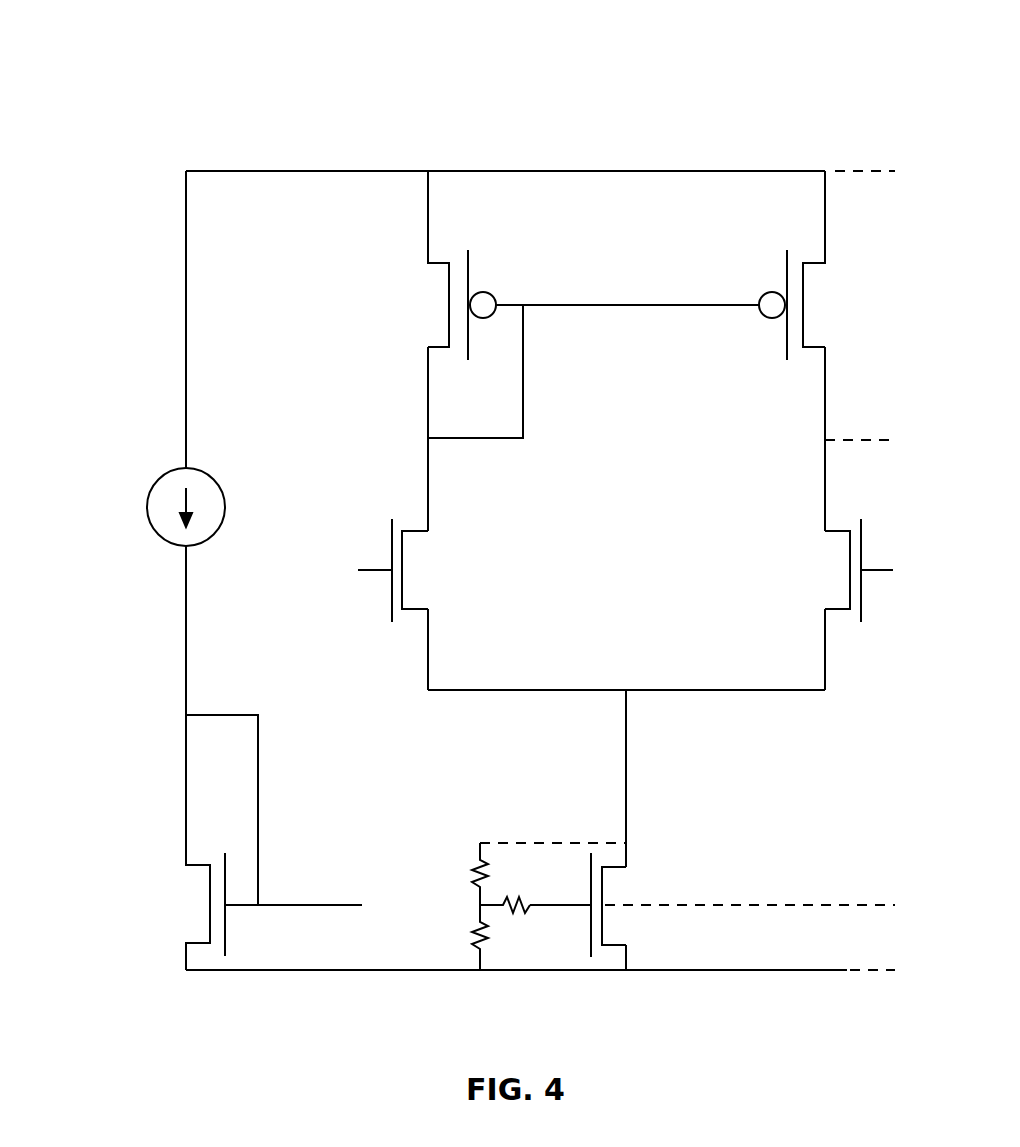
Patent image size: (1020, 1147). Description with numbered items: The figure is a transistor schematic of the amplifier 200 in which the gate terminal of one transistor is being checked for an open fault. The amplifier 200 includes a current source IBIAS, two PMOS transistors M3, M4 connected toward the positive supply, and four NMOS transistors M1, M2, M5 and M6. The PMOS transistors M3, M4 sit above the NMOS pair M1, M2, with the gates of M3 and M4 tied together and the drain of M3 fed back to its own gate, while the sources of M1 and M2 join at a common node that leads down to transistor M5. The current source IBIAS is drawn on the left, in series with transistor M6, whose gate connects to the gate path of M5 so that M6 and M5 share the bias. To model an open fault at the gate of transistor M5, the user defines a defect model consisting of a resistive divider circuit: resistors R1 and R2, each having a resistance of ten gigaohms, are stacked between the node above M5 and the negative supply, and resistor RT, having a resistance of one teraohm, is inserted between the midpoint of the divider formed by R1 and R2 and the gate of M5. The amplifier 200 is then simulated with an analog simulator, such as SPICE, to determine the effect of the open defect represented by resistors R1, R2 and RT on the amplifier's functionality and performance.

The amplifier 200 is at (845, 54).
The current source IBIAS is at (148, 507).
The NMOS transistor M1 is at (421, 570).
The NMOS transistor M2 is at (832, 570).
The PMOS transistor M3 is at (566, 265).
The PMOS transistor M4 is at (819, 265).
The NMOS transistor M5 is at (615, 905).
The NMOS transistor M6 is at (243, 842).
The resistor R1 is at (460, 874).
The resistor R2 is at (460, 937).
The resistor RT is at (508, 888).